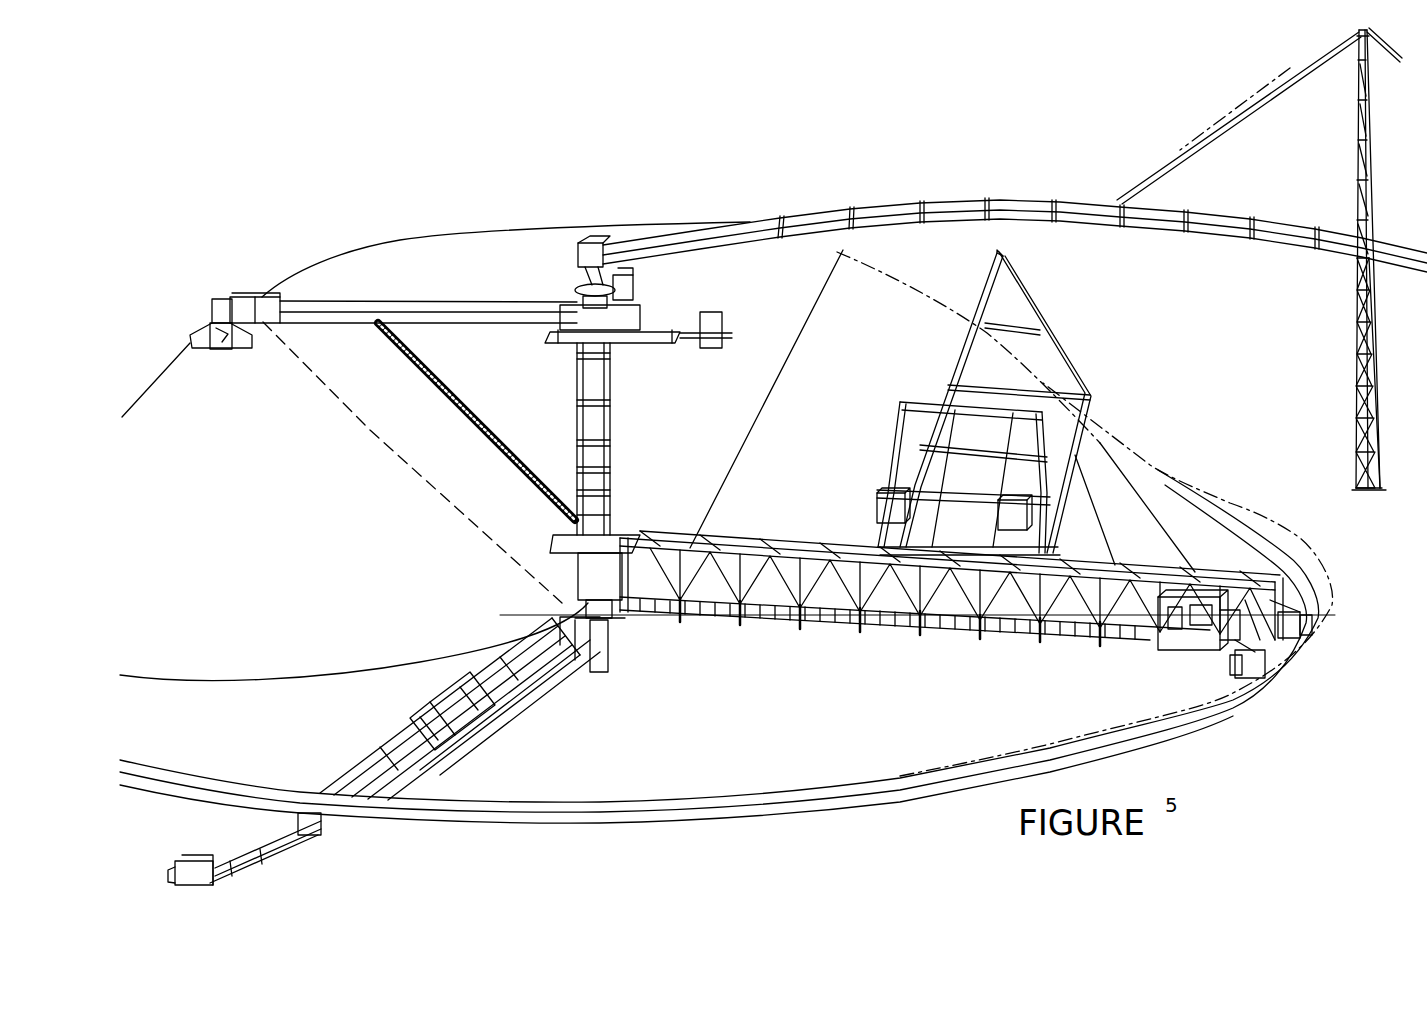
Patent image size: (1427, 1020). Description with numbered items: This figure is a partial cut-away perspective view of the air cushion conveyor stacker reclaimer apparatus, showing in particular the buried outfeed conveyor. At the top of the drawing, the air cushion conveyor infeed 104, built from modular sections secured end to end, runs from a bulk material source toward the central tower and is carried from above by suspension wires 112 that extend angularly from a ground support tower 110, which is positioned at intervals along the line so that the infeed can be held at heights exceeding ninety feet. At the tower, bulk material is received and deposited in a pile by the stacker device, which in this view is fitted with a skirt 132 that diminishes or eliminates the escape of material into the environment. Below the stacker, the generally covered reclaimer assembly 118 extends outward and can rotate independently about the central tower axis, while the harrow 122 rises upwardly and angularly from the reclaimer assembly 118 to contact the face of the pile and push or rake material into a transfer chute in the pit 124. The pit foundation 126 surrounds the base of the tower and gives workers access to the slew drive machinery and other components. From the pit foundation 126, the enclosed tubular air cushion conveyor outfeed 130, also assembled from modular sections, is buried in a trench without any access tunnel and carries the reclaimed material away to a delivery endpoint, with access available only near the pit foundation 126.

The air cushion conveyor infeed 104 is at (720, 233).
The ground support tower 110 is at (1358, 430).
The suspension wire 112 is at (1290, 68).
The reclaimer assembly 118 is at (813, 612).
The harrow 122 is at (1045, 327).
The pit 124 is at (640, 617).
The pit foundation 126 is at (605, 665).
The air cushion conveyor outfeed 130 is at (483, 775).
The skirt 132 is at (265, 345).